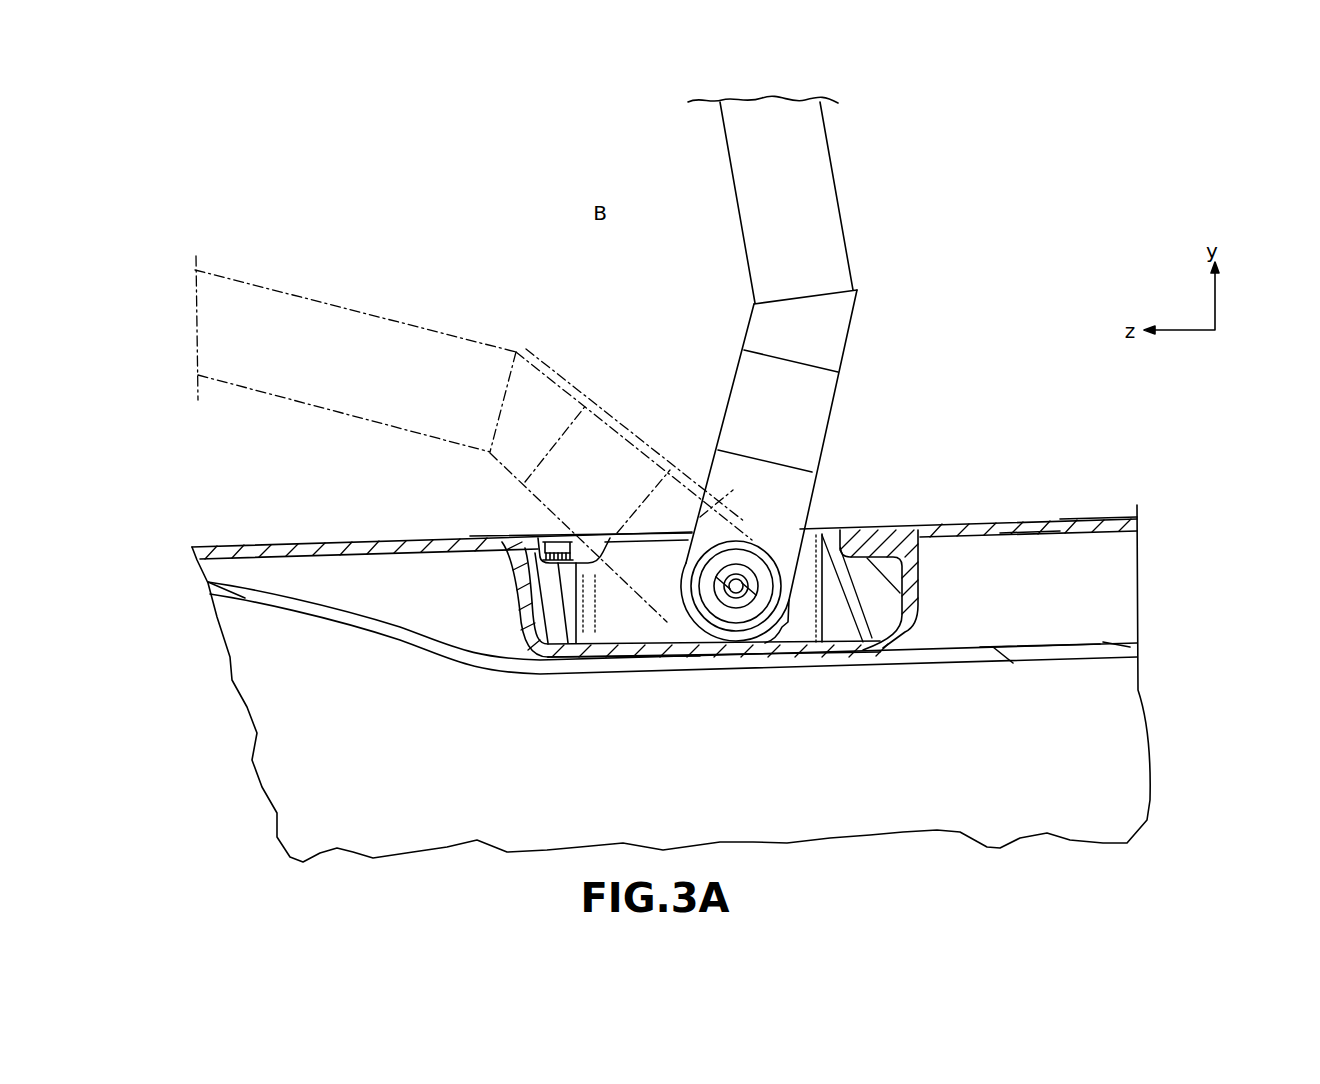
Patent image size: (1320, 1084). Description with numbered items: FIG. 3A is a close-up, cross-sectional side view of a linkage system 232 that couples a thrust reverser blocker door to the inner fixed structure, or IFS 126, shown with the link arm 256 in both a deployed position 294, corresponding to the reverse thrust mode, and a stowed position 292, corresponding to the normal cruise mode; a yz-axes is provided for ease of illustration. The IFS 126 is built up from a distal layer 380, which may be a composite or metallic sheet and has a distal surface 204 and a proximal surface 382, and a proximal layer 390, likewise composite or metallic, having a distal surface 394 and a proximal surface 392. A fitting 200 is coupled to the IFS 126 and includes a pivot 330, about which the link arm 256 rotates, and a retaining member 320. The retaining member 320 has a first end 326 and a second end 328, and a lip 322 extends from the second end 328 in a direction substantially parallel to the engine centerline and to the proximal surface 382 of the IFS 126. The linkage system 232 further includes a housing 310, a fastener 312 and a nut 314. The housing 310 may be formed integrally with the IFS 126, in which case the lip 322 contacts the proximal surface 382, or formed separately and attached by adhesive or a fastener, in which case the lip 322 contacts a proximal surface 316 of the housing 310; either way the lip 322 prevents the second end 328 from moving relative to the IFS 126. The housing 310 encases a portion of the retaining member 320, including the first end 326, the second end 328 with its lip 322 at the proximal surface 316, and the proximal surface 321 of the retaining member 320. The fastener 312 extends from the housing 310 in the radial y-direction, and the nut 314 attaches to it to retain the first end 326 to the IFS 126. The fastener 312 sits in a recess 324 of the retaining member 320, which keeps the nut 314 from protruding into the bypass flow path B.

The IFS 126 is at (1066, 508).
The fitting 200 is at (885, 460).
The distal surface 204 is at (1008, 527).
The linkage system 232 is at (1040, 202).
The link arm 256 is at (838, 202).
The stowed position 292 is at (864, 303).
The deployed position 294 is at (355, 425).
The housing 310 is at (558, 651).
The fastener 312 is at (556, 542).
The nut 314 is at (520, 537).
The proximal surface 316 is at (870, 559).
The retaining member 320 is at (633, 648).
The proximal surface 321 is at (593, 659).
The lip 322 is at (885, 604).
The recess 324 is at (586, 545).
The first end 326 is at (510, 605).
The second end 328 is at (925, 582).
The pivot 330 is at (743, 594).
The distal layer 380 is at (1104, 531).
The proximal surface 382 is at (1038, 539).
The proximal layer 390 is at (1104, 658).
The proximal surface 392 is at (1010, 659).
The distal surface 394 is at (1047, 644).